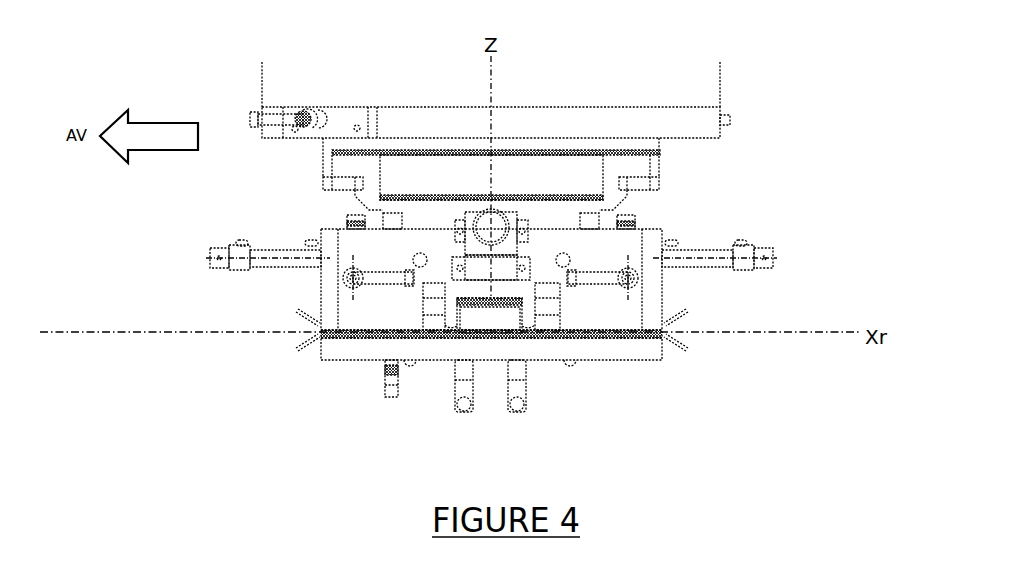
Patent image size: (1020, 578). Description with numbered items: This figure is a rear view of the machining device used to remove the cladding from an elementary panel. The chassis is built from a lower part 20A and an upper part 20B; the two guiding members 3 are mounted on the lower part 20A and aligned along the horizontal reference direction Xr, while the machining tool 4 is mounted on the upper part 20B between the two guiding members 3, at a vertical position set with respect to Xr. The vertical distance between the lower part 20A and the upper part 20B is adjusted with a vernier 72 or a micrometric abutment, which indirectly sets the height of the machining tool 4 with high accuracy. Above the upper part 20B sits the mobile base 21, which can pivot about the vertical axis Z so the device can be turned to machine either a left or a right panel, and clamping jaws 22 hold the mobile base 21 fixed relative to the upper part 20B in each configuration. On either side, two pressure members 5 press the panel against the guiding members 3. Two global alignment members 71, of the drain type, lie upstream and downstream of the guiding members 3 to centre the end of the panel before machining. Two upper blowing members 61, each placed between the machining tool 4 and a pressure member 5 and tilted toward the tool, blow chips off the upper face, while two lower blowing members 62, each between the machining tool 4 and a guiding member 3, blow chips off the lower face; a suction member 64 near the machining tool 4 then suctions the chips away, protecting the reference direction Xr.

The mobile base 21 is at (580, 117).
The clamping jaws 22 is at (285, 122).
The upper part 20B is at (383, 309).
The lower part 20A is at (355, 345).
The pressure member 5 is at (273, 240).
The upper blowing member 61 is at (420, 250).
The suction member 64 is at (494, 222).
The machining tool 4 is at (477, 320).
The guiding member 3 is at (410, 374).
The global alignment member 71 is at (296, 358).
The vernier 72 is at (393, 398).
The lower blowing member 62 is at (465, 408).